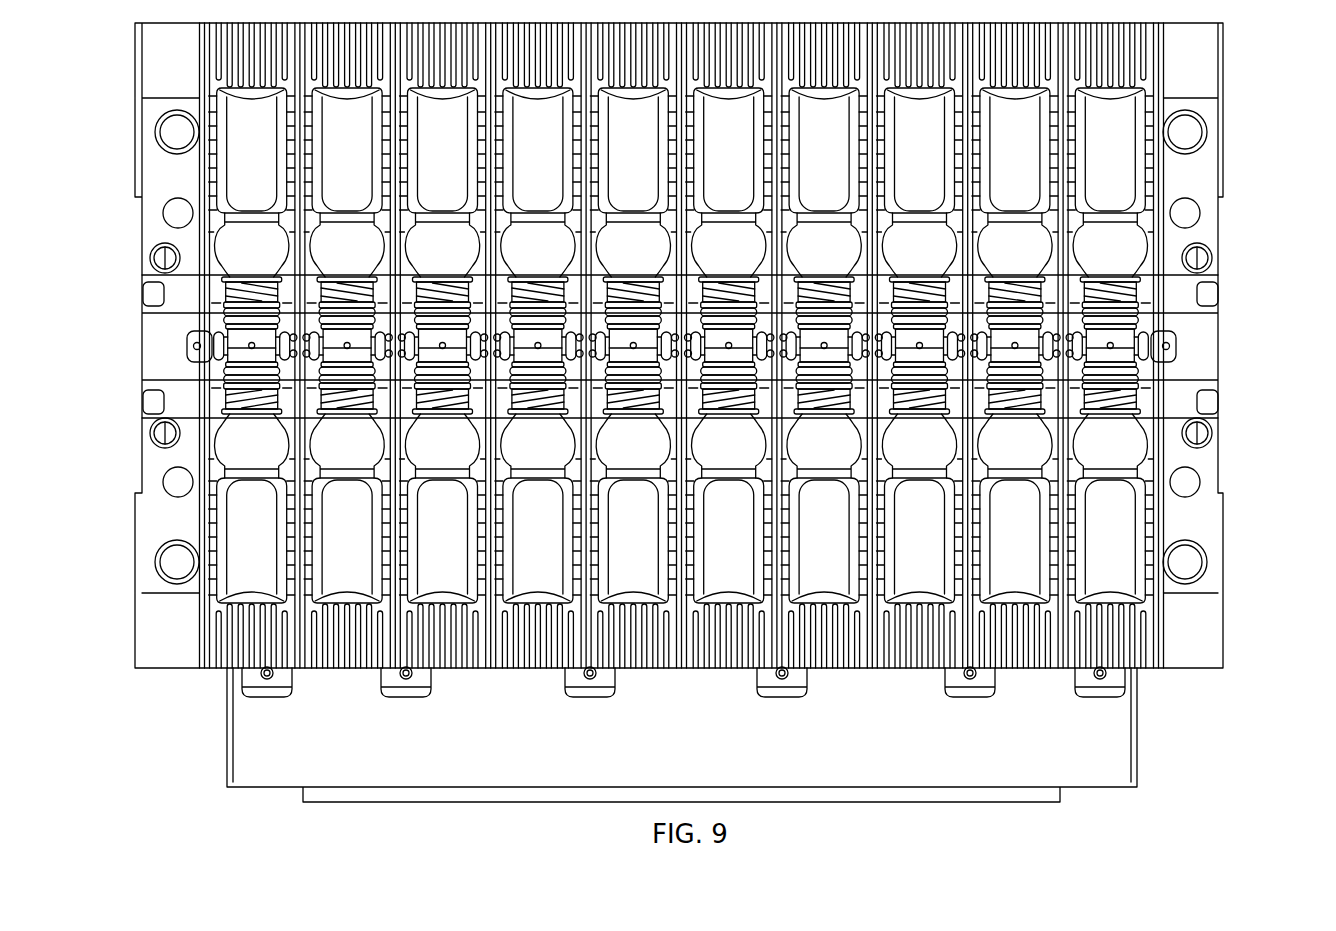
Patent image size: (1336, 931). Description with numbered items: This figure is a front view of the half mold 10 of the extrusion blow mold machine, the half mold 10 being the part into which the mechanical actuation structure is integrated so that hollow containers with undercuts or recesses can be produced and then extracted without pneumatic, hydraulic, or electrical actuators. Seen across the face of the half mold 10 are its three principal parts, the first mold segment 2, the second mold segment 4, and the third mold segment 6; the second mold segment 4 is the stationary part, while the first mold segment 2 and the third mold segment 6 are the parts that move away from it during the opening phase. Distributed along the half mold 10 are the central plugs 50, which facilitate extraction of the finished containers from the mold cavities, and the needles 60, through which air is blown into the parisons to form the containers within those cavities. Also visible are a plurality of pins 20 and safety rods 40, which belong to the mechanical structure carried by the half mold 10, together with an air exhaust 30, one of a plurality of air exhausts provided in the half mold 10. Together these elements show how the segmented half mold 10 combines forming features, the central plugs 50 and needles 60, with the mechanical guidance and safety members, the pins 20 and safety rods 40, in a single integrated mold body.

The half mold 10 is at (675, 412).
The first mold segment 2 is at (145, 88).
The second mold segment 4 is at (145, 370).
The third mold segment 6 is at (145, 650).
The pin 20 is at (165, 134).
The air exhaust 30 is at (230, 118).
The safety rod 40 is at (165, 215).
The central plug 50 is at (233, 338).
The needle 60 is at (1113, 343).